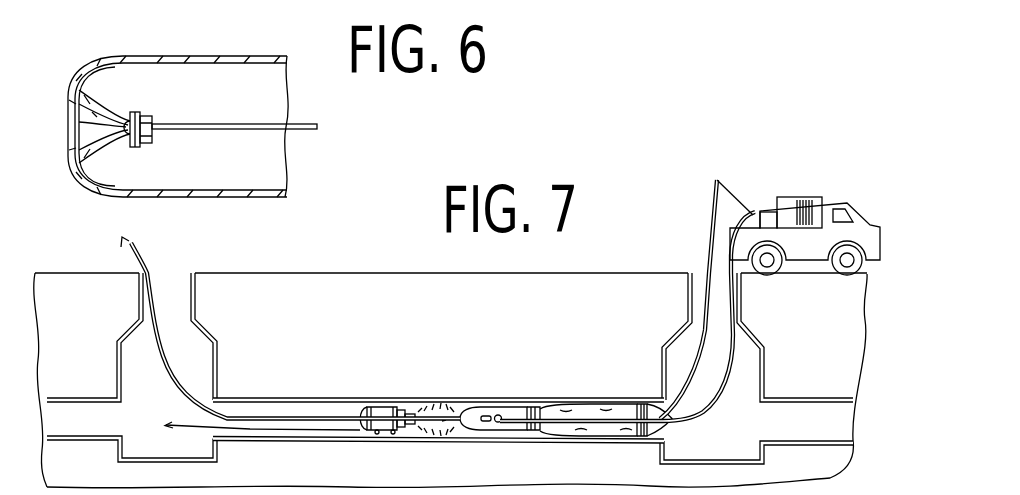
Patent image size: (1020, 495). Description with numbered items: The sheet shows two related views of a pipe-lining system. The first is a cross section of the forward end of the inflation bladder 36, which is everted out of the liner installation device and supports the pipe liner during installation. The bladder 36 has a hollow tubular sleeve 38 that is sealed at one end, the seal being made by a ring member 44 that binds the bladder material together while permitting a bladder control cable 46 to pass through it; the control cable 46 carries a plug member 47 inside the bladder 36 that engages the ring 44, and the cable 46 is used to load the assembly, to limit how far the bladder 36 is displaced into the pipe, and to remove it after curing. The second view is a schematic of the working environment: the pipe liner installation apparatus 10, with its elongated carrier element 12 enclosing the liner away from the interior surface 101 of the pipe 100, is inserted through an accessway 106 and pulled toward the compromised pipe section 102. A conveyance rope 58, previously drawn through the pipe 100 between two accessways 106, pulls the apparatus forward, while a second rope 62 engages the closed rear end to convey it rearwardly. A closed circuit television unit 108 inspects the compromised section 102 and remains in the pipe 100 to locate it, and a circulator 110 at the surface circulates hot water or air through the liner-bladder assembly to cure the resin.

In FIG. 6, the inflation bladder 36 is at (110, 46).
In FIG. 6, the hollow tubular sleeve 38 is at (173, 60).
In FIG. 6, the ring member 44 is at (135, 113).
In FIG. 6, the bladder control cable 46 is at (272, 132).
In FIG. 6, the plug member 47 is at (125, 132).
In FIG. 7, the conveyance rope 58 is at (150, 290).
In FIG. 7, the pipe 100 is at (325, 398).
In FIG. 7, the interior surface 101 is at (313, 431).
In FIG. 7, the compromised pipe section 102 is at (437, 398).
In FIG. 7, the accessway 106 is at (143, 447).
In FIG. 7, the closed circuit television unit 108 is at (382, 408).
In FIG. 7, the pipe liner installation apparatus 10 is at (517, 439).
In FIG. 7, the elongated carrier element 12 is at (590, 432).
In FIG. 7, the rope 62 is at (712, 204).
In FIG. 7, the circulator 110 is at (803, 197).